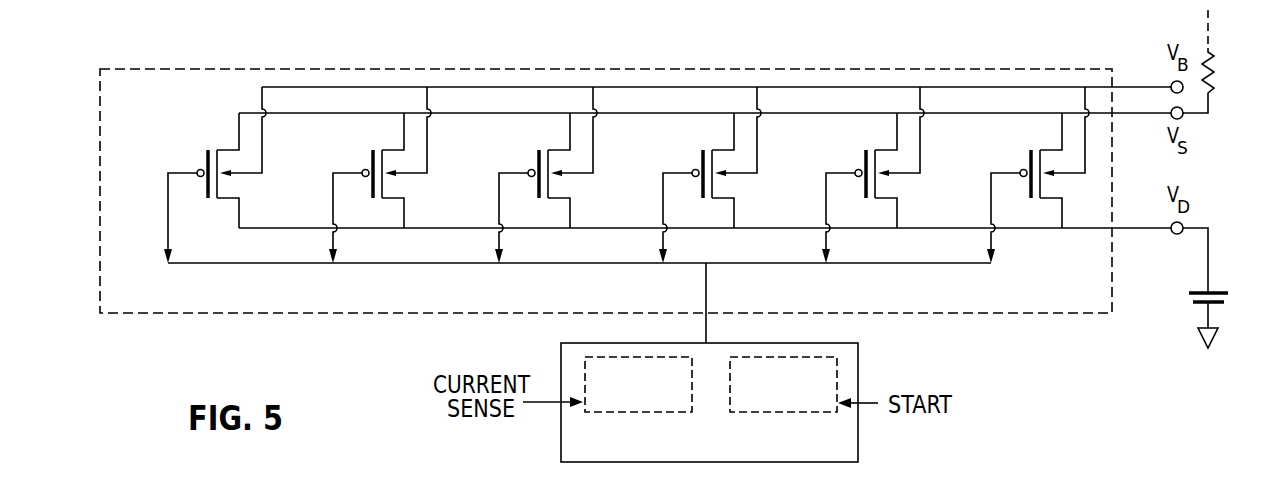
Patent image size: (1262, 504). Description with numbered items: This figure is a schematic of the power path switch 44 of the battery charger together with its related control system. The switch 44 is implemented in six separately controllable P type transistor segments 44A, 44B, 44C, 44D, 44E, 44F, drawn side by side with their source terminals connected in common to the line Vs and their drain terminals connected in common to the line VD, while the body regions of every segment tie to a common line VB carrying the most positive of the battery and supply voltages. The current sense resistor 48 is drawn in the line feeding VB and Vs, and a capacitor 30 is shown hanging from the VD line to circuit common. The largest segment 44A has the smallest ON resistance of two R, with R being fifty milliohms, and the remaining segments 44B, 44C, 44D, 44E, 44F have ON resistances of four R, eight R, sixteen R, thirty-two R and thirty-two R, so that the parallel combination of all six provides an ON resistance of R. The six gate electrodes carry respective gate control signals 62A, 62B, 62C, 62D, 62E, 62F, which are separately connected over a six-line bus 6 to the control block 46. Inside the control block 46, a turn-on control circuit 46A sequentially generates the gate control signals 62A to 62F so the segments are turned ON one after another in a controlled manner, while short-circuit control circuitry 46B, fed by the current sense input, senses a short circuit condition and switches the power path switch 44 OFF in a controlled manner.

The power path switch 44 is at (826, 51).
The current sense resistor 48 is at (1216, 87).
The capacitor 30 is at (1217, 291).
The control bus 6 is at (693, 283).
The control block 46 is at (859, 432).
The control circuit 46A is at (838, 375).
The control circuitry 46B is at (583, 360).
The transistor segment 44A is at (1028, 186).
The transistor segment 44B is at (863, 186).
The transistor segment 44C is at (700, 186).
The transistor segment 44D is at (536, 186).
The transistor segment 44E is at (370, 186).
The transistor segment 44F is at (205, 186).
The gate control signal 62A is at (991, 202).
The gate control signal 62B is at (826, 202).
The gate control signal 62C is at (663, 202).
The gate control signal 62D is at (499, 202).
The gate control signal 62E is at (333, 202).
The gate control signal 62F is at (168, 202).